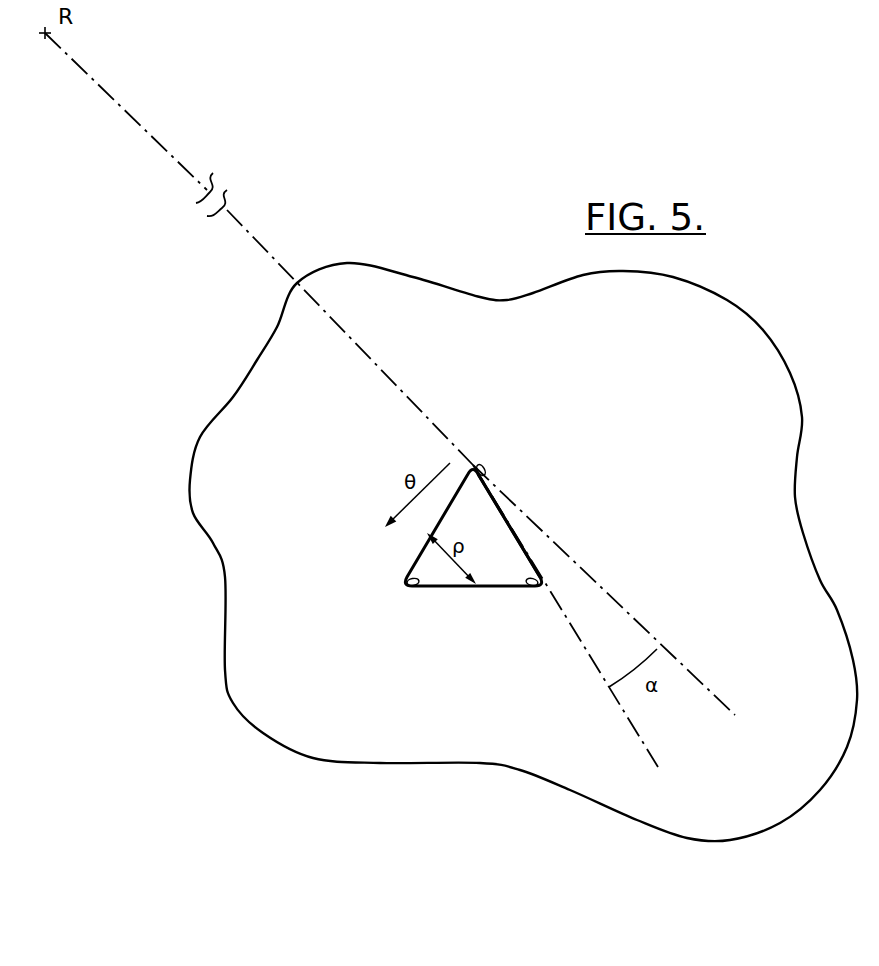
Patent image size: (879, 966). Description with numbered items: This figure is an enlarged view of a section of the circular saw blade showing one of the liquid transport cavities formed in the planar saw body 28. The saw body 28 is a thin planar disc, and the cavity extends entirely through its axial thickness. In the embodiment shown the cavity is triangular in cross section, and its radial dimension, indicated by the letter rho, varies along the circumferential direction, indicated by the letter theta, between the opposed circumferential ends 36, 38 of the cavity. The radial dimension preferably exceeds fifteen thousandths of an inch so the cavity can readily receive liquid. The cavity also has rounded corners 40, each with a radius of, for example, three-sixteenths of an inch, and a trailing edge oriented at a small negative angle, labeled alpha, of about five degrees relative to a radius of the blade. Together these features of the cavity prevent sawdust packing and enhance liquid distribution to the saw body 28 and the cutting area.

The planar saw body 28 is at (310, 737).
The circumferential end 36 is at (400, 578).
The circumferential end 38 is at (506, 519).
The rounded corners 40 is at (487, 470).